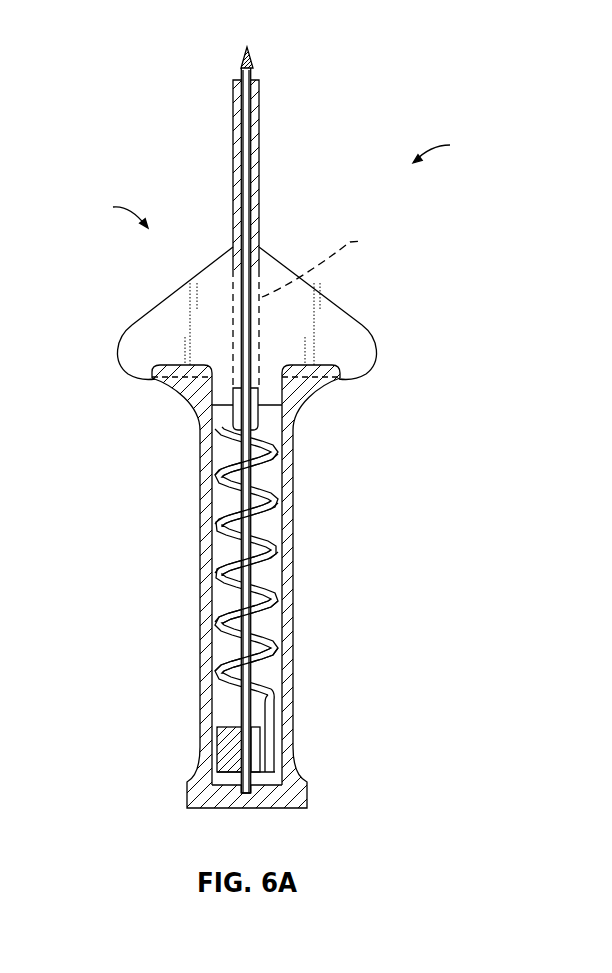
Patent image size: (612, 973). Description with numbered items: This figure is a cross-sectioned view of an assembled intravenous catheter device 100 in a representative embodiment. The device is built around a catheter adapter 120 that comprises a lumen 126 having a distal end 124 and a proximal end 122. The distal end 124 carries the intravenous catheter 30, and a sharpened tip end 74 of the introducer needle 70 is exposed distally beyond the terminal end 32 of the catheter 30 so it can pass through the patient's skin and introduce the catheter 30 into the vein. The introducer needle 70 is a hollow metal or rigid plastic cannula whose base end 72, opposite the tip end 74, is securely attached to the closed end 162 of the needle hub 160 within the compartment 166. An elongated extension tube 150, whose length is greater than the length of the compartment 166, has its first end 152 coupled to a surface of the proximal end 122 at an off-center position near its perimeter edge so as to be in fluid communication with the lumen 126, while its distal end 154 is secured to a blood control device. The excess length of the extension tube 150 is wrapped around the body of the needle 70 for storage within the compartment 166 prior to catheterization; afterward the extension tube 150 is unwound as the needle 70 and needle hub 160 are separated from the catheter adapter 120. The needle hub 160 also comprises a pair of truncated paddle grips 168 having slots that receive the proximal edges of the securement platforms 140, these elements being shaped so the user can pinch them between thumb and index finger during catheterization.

The catheter device 100 is at (456, 149).
The catheter adapter 120 is at (109, 213).
The tip end 74 is at (249, 50).
The terminal end 32 is at (254, 80).
The catheter 30 is at (260, 118).
The introducer needle 70 is at (246, 147).
The distal end 124 is at (266, 250).
The lumen 126 is at (335, 264).
The securement platforms 140 is at (333, 309).
The truncated paddle grips 168 is at (360, 380).
The proximal end 122 is at (268, 408).
The first end 152 is at (212, 445).
The extension tube 150 is at (280, 554).
The compartment 166 is at (220, 660).
The needle hub 160 is at (293, 657).
The distal end 154 is at (277, 692).
The closed end 162 is at (308, 797).
The base end 72 is at (247, 795).